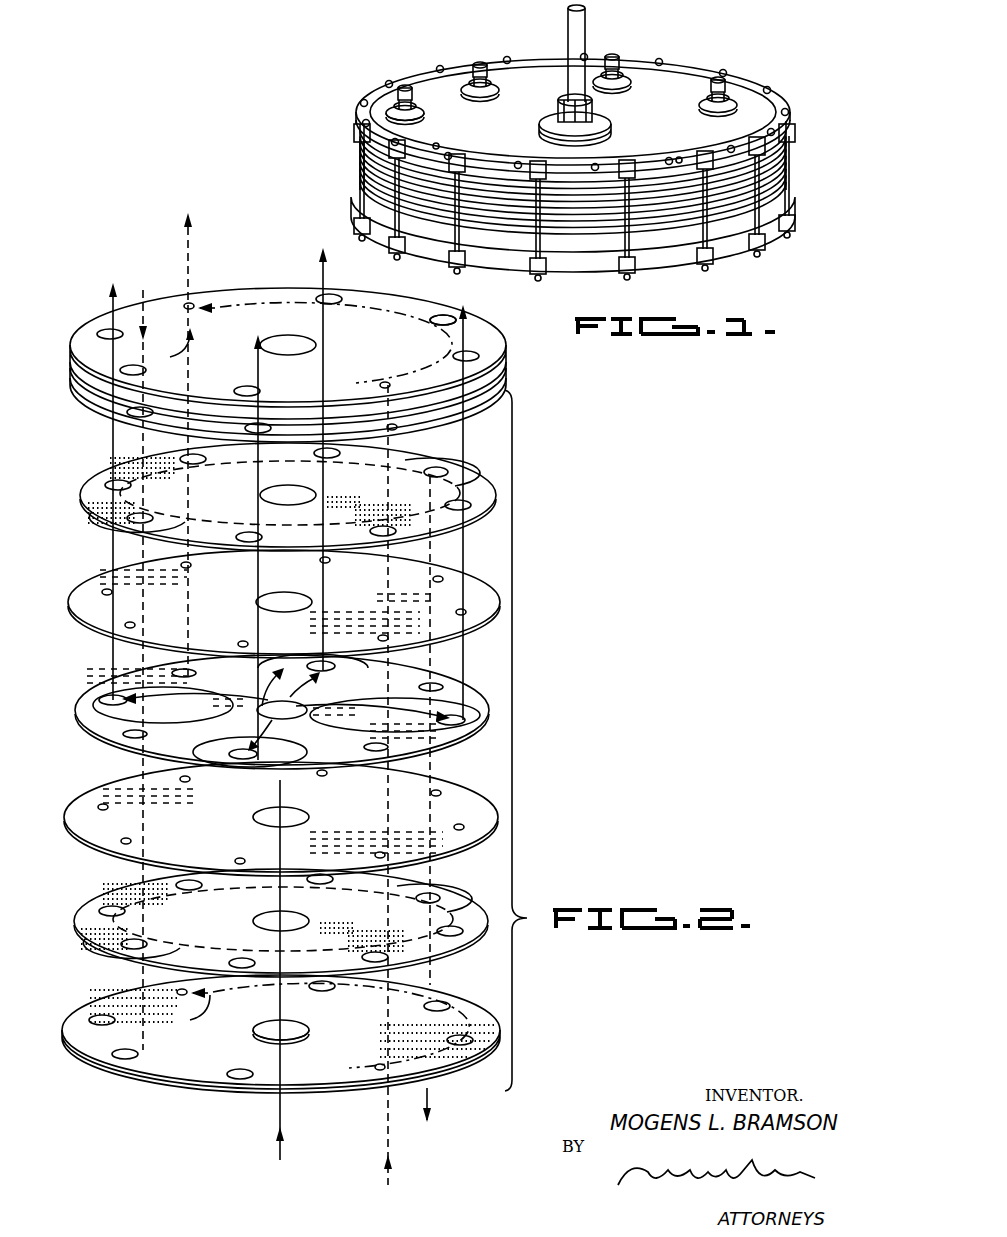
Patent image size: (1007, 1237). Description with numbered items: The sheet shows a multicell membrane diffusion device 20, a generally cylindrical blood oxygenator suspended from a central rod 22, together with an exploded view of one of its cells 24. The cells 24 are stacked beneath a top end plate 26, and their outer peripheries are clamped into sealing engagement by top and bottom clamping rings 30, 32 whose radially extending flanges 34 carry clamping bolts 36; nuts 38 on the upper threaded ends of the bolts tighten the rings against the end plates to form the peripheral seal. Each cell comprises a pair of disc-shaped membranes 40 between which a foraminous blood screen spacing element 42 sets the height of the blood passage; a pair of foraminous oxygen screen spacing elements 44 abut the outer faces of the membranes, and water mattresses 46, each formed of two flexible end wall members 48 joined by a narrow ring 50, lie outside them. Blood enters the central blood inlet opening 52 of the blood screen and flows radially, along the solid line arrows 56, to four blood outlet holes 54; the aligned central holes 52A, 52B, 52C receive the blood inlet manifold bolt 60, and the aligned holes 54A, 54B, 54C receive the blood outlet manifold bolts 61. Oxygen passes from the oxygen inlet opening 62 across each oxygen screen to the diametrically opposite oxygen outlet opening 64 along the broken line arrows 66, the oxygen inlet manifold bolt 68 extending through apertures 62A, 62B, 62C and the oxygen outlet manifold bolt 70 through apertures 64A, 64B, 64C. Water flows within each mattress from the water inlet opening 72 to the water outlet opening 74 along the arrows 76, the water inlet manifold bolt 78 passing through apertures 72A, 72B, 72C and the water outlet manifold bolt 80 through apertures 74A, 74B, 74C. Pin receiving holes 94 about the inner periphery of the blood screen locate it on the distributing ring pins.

In FIG. 1, the membrane diffusion device 20 is at (350, 140).
In FIG. 1, the central rod 22 is at (587, 27).
In FIG. 1, the cells 24 is at (362, 184).
In FIG. 1, the top end plate 26 is at (657, 115).
In FIG. 1, the top clamping ring 30 is at (790, 116).
In FIG. 1, the bottom clamping ring 32 is at (737, 255).
In FIG. 1, the radially extending flanges 34 is at (792, 145).
In FIG. 1, the clamping bolts 36 is at (706, 232).
In FIG. 1, the nuts 38 is at (788, 96).
In FIG. 1, the blood inlet manifold bolt 60 is at (594, 124).
In FIG. 1, the blood outlet manifold bolts 61 is at (414, 110).
In FIG. 1, the oxygen inlet manifold bolt 68 is at (722, 88).
In FIG. 1, the oxygen outlet manifold bolt 70 is at (440, 144).
In FIG. 1, the water inlet manifold bolt 78 is at (679, 157).
In FIG. 1, the water outlet manifold bolt 80 is at (482, 74).
In FIG. 2, the membranes 40 is at (68, 598).
In FIG. 2, the blood screen spacing element 42 is at (78, 712).
In FIG. 2, the oxygen screen spacing elements 44 is at (85, 488).
In FIG. 2, the water mattresses 46 is at (57, 400).
In FIG. 2, the flexible end wall members 48 is at (399, 306).
In FIG. 2, the narrow ring 50 is at (500, 376).
In FIG. 2, the central blood inlet opening 52 is at (290, 700).
In FIG. 2, the central holes of membranes 52A is at (307, 601).
In FIG. 2, the central holes of oxygen screen spacing elements 52B is at (302, 492).
In FIG. 2, the central holes of water mattresses 52C is at (313, 348).
In FIG. 2, the blood outlet holes 54 is at (100, 696).
In FIG. 2, the blood outlet holes of membranes 54A is at (324, 562).
In FIG. 2, the blood outlet holes of oxygen screen spacing elements 54B is at (322, 455).
In FIG. 2, the blood outlet holes of water mattresses 54C is at (335, 298).
In FIG. 2, the solid line arrows 56 is at (190, 700).
In FIG. 2, the oxygen inlet opening 62 is at (130, 519).
In FIG. 2, the oxygen inlet apertures of membranes 62A is at (136, 627).
In FIG. 2, the oxygen inlet aperture of blood screen 62B is at (125, 739).
In FIG. 2, the oxygen inlet apertures of water mattresses 62C is at (145, 373).
In FIG. 2, the oxygen outlet opening 64 is at (436, 469).
In FIG. 2, the oxygen outlet apertures of membranes 64A is at (437, 582).
In FIG. 2, the oxygen outlet aperture of blood screen 64B is at (430, 687).
In FIG. 2, the oxygen outlet apertures of water mattresses 64C is at (445, 316).
In FIG. 2, the broken line arrows 66 is at (248, 477).
In FIG. 2, the water inlet opening 72 is at (392, 384).
In FIG. 2, the water inlet apertures of membranes 72A is at (382, 638).
In FIG. 2, the water inlet apertures of oxygen screen members 72B is at (385, 532).
In FIG. 2, the water inlet aperture of blood screen 72C is at (375, 747).
In FIG. 2, the water outlet opening 74 is at (189, 298).
In FIG. 2, the water outlet apertures of membranes 74A is at (186, 568).
In FIG. 2, the water outlet apertures of oxygen screen members 74B is at (186, 462).
In FIG. 2, the water outlet aperture of blood screen 74C is at (194, 674).
In FIG. 2, the arrows 76 is at (241, 307).
In FIG. 2, the pin receiving holes 94 is at (300, 668).